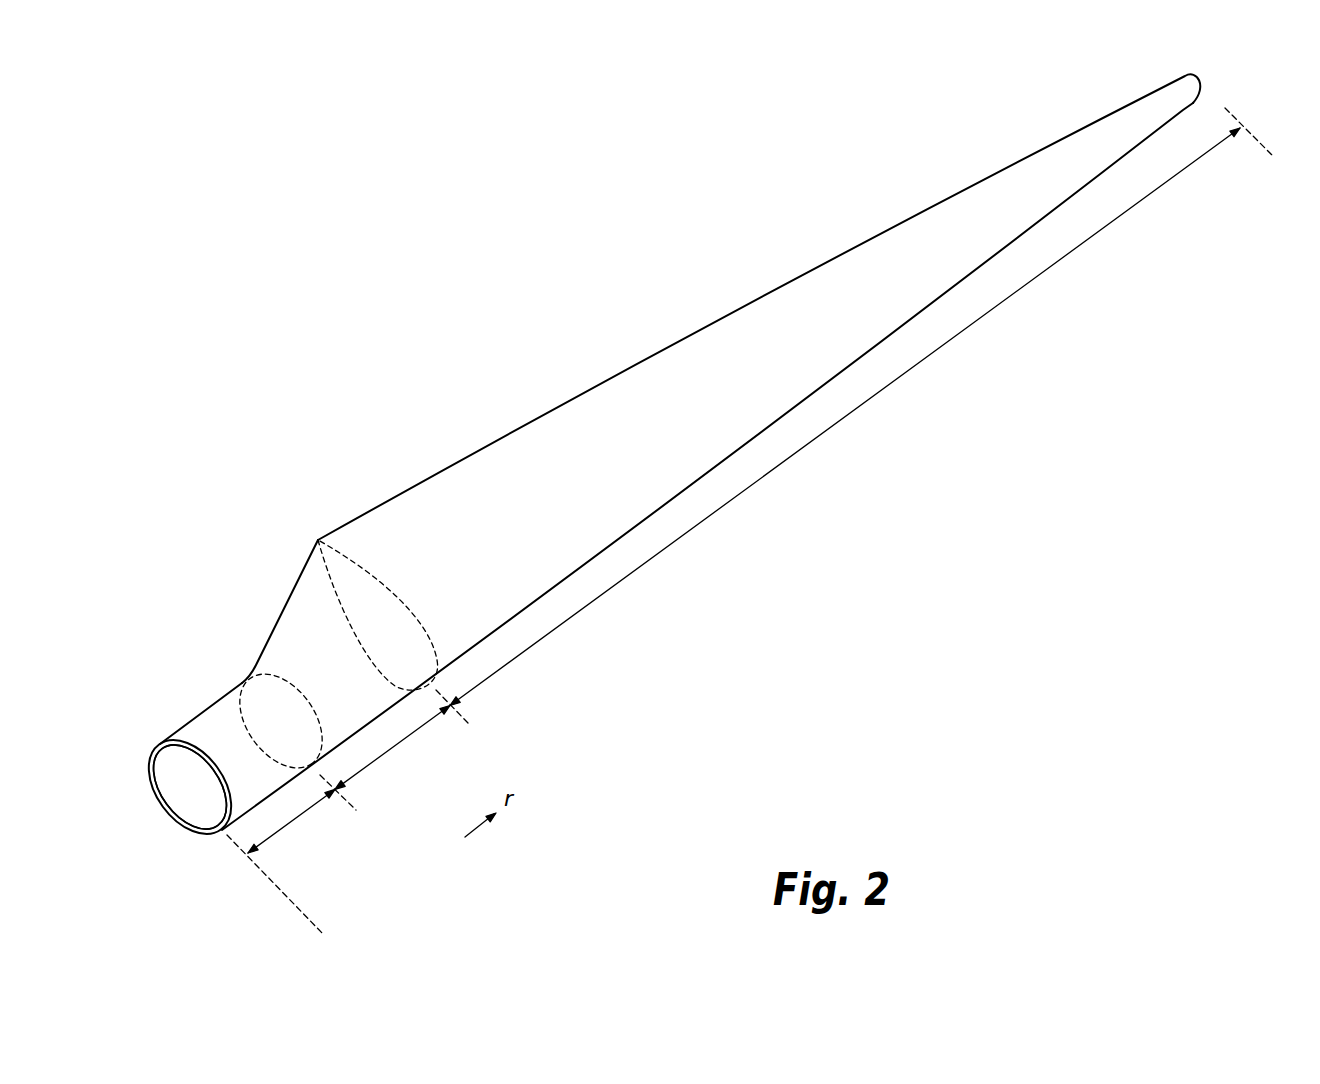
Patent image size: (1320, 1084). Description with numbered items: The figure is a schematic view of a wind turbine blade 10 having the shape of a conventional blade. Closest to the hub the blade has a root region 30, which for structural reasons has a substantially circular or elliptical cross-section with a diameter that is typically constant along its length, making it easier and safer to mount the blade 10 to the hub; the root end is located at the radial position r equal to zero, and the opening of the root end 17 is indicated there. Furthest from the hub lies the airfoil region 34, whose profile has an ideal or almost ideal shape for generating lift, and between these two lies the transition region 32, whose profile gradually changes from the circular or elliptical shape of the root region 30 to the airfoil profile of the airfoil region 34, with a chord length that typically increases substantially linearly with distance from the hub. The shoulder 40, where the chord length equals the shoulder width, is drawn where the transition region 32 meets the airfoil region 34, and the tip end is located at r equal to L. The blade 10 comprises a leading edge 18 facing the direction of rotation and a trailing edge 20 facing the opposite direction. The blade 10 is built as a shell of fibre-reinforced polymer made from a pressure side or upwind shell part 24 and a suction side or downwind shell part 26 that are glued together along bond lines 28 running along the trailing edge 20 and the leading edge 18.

The wind turbine blade 10 is at (660, 490).
The root end opening 17 is at (182, 770).
The leading edge 18 is at (883, 338).
The trailing edge 20 is at (747, 307).
The upwind shell part 24 is at (186, 741).
The downwind shell part 26 is at (192, 830).
The bond lines 28 is at (178, 738).
The root region 30 is at (295, 820).
The transition region 32 is at (397, 747).
The airfoil region 34 is at (768, 472).
The shoulder 40 is at (318, 540).